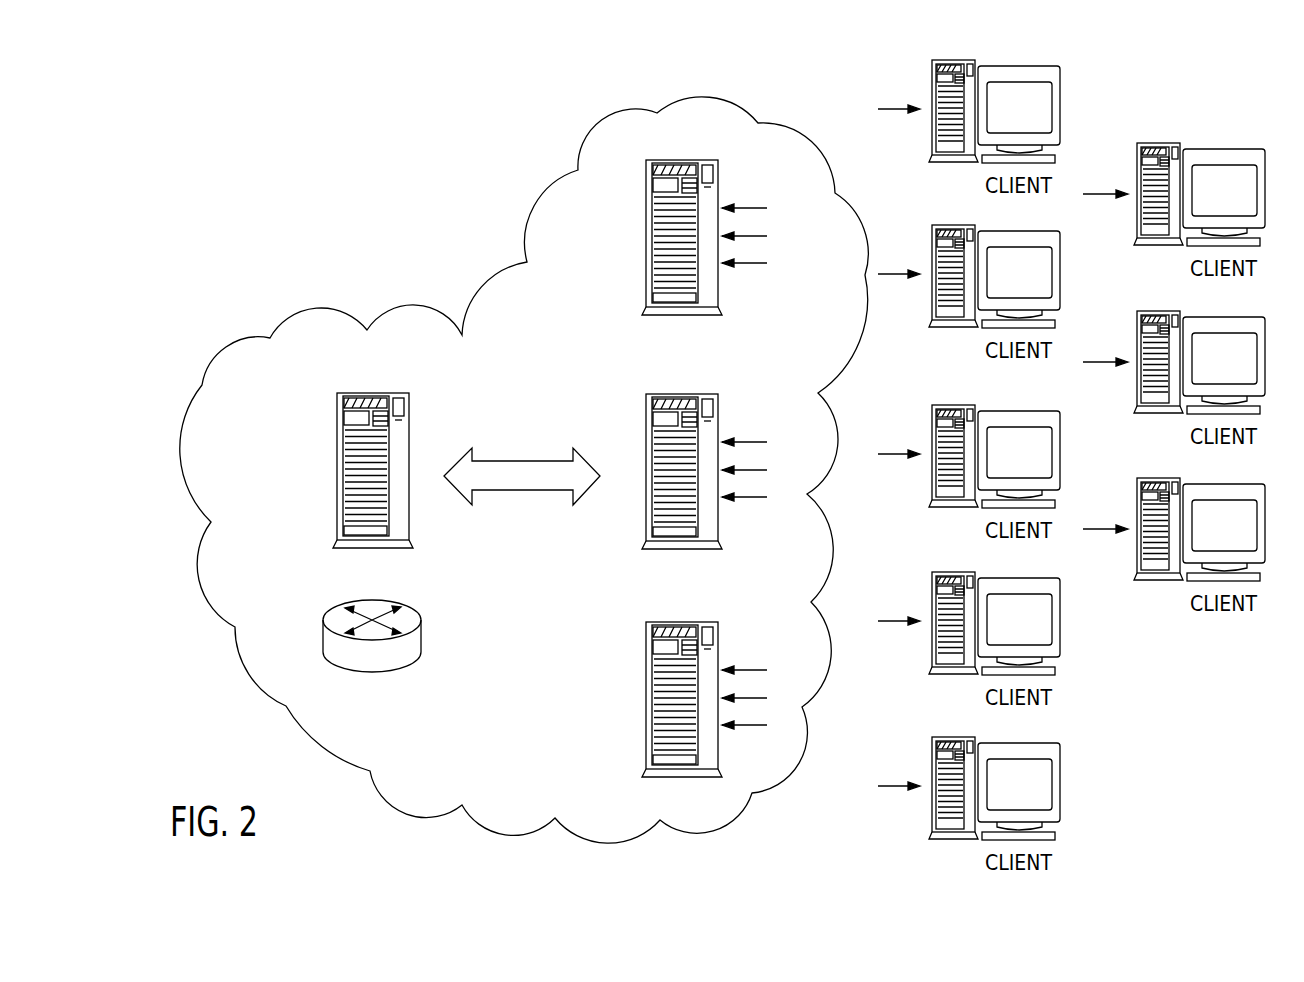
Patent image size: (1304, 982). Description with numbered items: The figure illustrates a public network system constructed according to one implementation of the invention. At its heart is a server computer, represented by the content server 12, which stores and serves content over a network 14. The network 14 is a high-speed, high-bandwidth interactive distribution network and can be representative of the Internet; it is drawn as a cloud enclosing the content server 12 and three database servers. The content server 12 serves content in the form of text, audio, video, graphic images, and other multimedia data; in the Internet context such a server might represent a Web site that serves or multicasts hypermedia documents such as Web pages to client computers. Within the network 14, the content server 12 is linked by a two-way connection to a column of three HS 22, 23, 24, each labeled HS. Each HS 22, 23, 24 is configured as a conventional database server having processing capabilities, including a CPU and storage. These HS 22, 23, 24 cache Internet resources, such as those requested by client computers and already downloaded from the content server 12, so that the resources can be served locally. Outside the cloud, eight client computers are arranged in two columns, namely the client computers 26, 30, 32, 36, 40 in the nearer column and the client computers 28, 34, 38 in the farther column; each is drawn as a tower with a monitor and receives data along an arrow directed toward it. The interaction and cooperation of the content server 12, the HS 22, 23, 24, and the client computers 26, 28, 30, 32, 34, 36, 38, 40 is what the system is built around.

The content server 12 is at (286, 492).
The network 14 is at (468, 184).
The HS 22 is at (684, 622).
The HS 23 is at (684, 394).
The HS 24 is at (684, 160).
The client computer 26 is at (950, 737).
The client computer 28 is at (1155, 478).
The client computer 30 is at (950, 572).
The client computer 32 is at (950, 405).
The client computer 34 is at (1155, 311).
The client computer 36 is at (950, 225).
The client computer 38 is at (1155, 143).
The client computer 40 is at (950, 60).